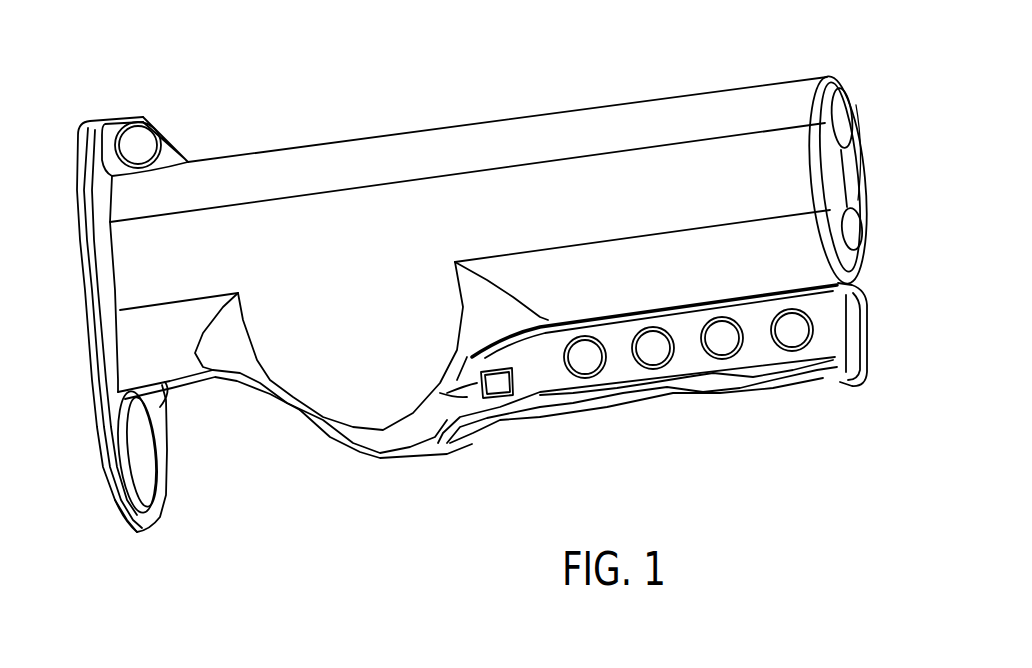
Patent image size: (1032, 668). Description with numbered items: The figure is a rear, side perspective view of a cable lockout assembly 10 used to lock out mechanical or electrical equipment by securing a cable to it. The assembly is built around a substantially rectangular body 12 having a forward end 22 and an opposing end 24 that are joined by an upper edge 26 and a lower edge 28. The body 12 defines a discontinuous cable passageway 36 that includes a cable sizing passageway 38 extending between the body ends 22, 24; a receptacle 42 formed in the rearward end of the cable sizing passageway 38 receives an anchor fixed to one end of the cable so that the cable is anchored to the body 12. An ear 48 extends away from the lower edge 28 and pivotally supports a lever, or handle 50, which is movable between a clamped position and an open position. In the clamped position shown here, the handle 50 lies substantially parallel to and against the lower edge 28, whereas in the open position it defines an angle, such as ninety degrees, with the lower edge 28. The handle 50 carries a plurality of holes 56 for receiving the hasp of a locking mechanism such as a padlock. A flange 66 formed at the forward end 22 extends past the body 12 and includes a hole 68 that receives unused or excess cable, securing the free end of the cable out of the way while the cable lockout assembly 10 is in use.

The cable lockout assembly 10 is at (709, 66).
The body 12 is at (832, 72).
The forward end 22 is at (82, 272).
The opposing end 24 is at (842, 180).
The upper edge 26 is at (380, 137).
The lower edge 28 is at (248, 383).
The discontinuous cable passageway 36 is at (838, 119).
The cable sizing passageway 38 is at (468, 397).
The receptacle 42 is at (862, 146).
The ear 48 is at (375, 400).
The handle 50 is at (837, 383).
The holes 56 is at (795, 333).
The flange 66 is at (127, 528).
The hole 68 is at (137, 440).